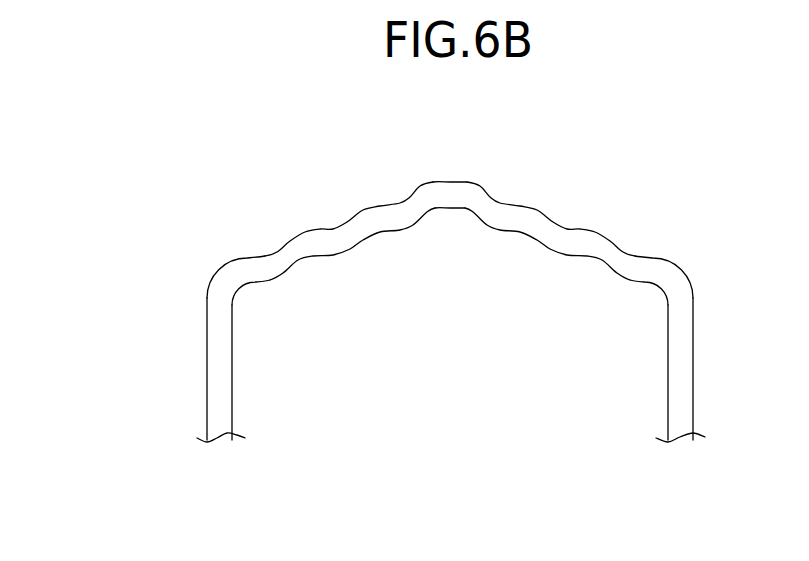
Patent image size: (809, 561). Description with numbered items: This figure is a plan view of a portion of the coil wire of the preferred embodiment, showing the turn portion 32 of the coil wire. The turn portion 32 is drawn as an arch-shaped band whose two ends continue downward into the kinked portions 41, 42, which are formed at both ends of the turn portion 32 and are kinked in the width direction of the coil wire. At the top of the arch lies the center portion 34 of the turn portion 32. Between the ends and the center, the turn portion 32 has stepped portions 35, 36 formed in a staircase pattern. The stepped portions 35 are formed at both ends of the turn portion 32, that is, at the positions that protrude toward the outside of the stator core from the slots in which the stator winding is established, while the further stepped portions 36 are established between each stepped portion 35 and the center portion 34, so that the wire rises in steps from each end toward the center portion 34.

The turn portion 32 is at (457, 267).
The center portion 34 is at (477, 183).
The stepped portion 35 is at (248, 267).
The stepped portion 36 is at (383, 213).
The kinked portion 41 is at (188, 322).
The kinked portion 42 is at (720, 323).